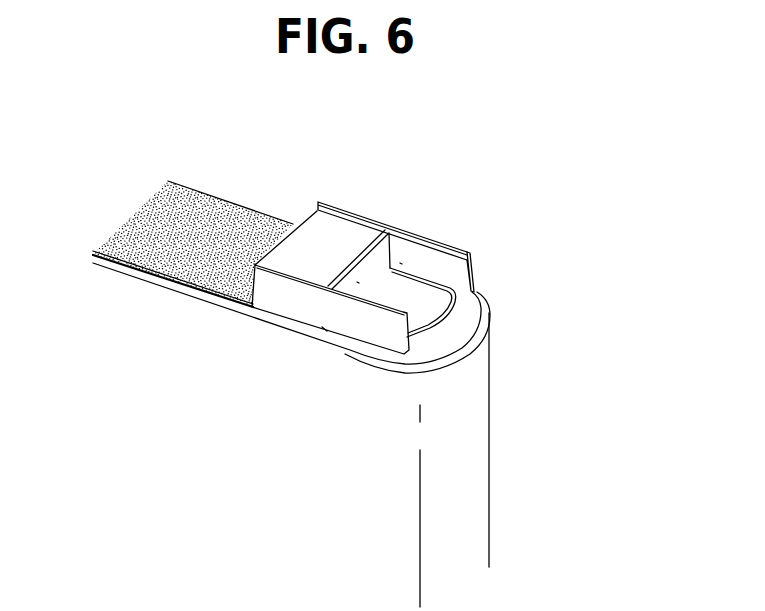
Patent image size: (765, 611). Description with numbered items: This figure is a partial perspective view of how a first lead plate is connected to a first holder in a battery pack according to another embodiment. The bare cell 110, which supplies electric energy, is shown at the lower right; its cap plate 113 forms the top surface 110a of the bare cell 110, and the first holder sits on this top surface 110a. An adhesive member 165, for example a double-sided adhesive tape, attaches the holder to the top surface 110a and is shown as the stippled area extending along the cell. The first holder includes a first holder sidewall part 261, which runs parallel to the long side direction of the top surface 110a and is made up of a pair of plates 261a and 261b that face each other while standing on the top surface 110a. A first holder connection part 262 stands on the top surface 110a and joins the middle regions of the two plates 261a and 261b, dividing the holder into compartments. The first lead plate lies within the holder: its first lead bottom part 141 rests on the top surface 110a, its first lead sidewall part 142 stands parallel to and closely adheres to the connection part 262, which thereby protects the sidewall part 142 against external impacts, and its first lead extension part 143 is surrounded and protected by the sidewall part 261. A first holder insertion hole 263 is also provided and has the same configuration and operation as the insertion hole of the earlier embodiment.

The bare cell 110 is at (477, 438).
The top surface of the bare cell 110a is at (484, 313).
The cap plate 113 is at (478, 345).
The first lead bottom part 141 is at (340, 230).
The first lead sidewall part 142 is at (395, 258).
The first lead extension part 143 is at (473, 268).
The adhesive member 165 is at (232, 208).
The first holder sidewall part 261 is at (138, 358).
The plate of the first holder sidewall part 261a is at (277, 270).
The plate of the first holder sidewall part 261b is at (300, 218).
The first holder connection part 262 is at (358, 282).
The first holder insertion hole 263 is at (400, 263).